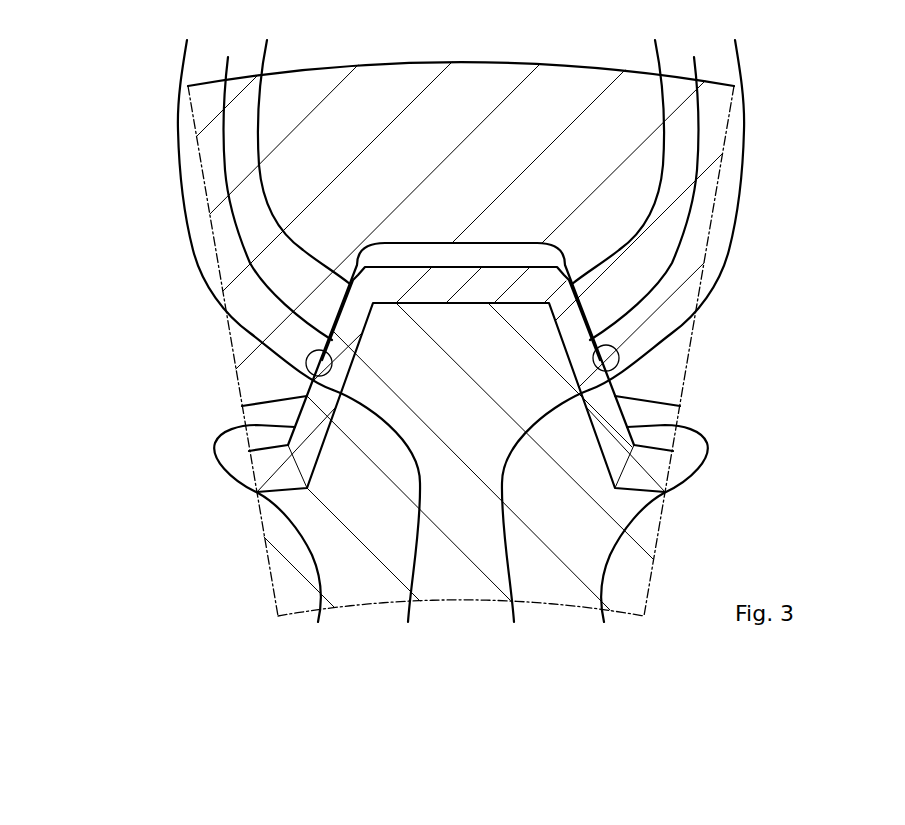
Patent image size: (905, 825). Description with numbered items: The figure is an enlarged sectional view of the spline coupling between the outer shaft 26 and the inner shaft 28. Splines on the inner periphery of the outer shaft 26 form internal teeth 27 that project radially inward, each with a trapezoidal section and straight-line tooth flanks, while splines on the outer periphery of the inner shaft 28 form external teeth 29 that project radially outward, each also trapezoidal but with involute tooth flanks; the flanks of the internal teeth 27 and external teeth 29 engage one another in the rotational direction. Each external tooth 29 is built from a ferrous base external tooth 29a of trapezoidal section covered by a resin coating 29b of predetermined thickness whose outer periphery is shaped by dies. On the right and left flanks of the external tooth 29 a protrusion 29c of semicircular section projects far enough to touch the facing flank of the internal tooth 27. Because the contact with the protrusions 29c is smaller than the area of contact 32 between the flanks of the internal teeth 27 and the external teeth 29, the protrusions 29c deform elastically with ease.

The outer shaft 26 is at (347, 133).
The internal teeth 27 is at (461, 519).
The inner shaft 28 is at (363, 522).
The external teeth 29 is at (461, 537).
The base external teeth 29a is at (461, 202).
The resin coating 29b is at (462, 188).
The protrusion 29c is at (464, 149).
The area of contact 32 is at (308, 371).